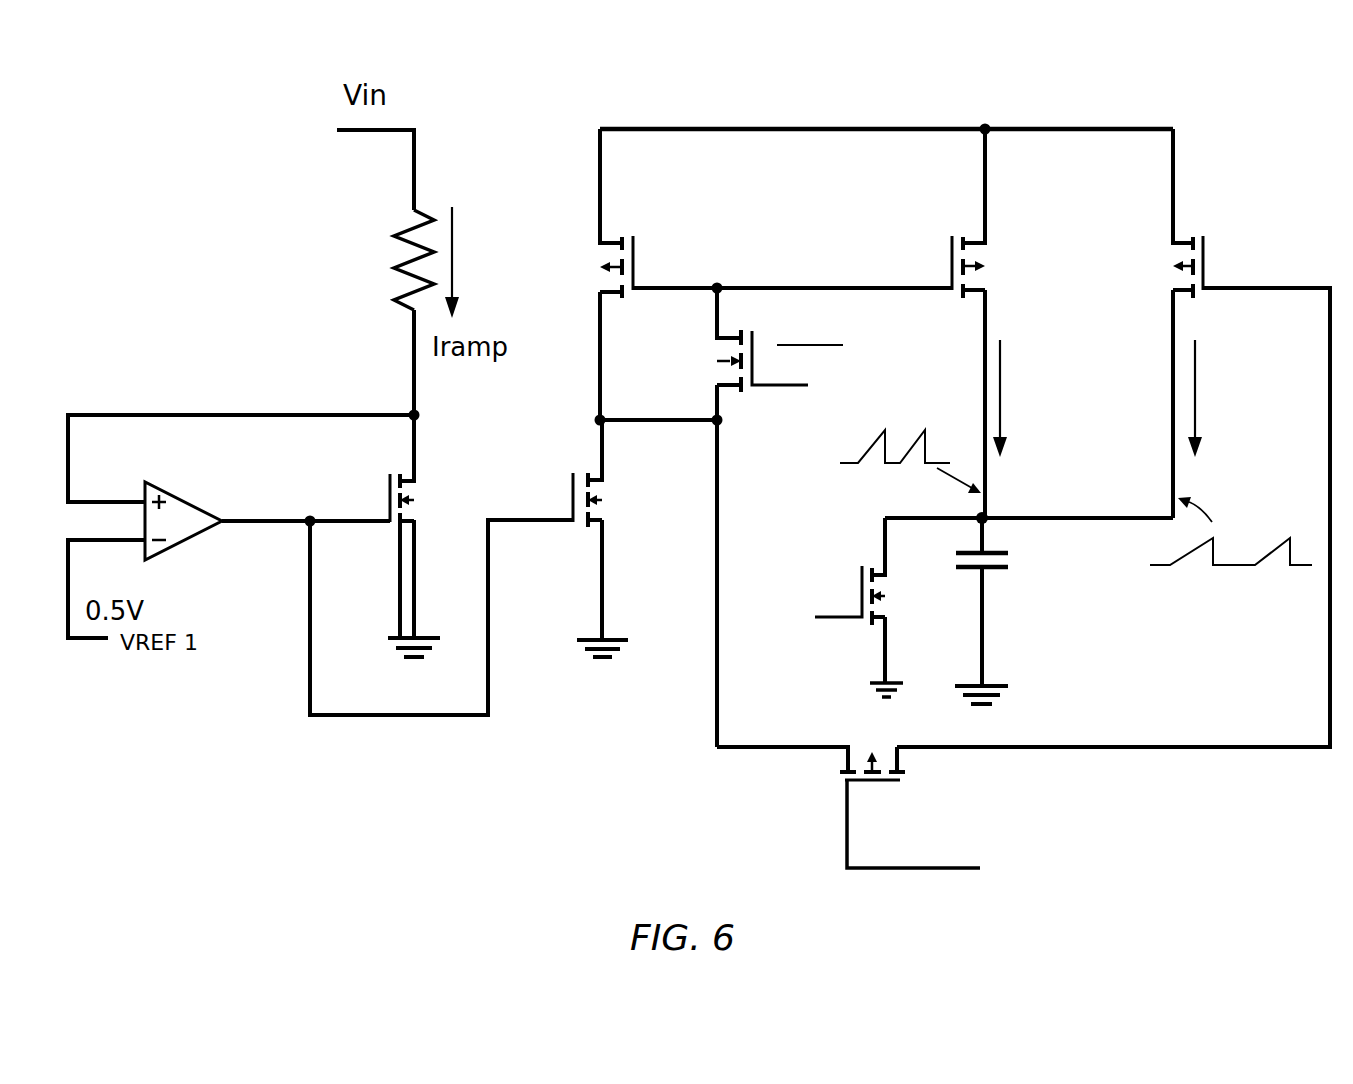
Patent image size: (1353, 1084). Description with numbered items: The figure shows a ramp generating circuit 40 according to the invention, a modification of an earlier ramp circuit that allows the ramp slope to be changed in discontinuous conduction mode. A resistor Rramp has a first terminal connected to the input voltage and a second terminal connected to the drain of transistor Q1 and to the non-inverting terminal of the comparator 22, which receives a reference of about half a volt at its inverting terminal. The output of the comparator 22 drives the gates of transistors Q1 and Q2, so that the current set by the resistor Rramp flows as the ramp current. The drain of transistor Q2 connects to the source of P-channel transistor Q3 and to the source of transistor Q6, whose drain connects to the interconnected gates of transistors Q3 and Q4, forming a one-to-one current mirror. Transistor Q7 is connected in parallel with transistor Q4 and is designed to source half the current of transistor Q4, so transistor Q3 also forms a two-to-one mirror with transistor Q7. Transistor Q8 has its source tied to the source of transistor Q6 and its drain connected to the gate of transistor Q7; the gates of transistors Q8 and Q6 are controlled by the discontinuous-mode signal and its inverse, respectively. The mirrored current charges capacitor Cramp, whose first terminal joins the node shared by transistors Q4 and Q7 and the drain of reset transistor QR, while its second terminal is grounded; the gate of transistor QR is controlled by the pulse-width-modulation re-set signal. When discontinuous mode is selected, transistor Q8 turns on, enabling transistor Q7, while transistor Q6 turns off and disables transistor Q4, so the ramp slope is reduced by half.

The comparator 22 is at (186, 497).
The circuit 40 is at (963, 477).
The transistor Q1 is at (427, 536).
The transistor Q2 is at (615, 538).
The transistor Q3 is at (658, 274).
The transistor Q4 is at (851, 323).
The transistor Q6 is at (751, 517).
The transistor Q7 is at (1113, 438).
The transistor Q8 is at (848, 789).
The transistor QR is at (854, 607).
The resistor Rramp is at (362, 260).
The capacitor Cramp is at (1032, 611).